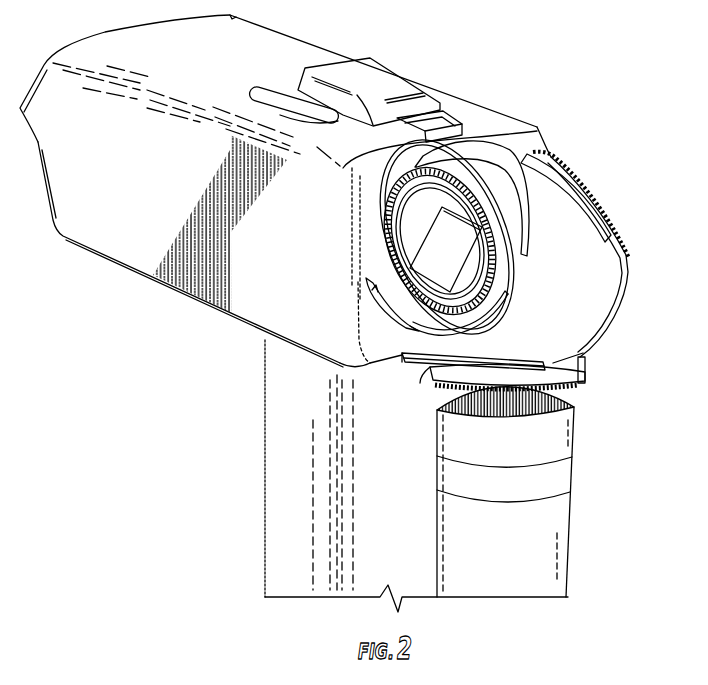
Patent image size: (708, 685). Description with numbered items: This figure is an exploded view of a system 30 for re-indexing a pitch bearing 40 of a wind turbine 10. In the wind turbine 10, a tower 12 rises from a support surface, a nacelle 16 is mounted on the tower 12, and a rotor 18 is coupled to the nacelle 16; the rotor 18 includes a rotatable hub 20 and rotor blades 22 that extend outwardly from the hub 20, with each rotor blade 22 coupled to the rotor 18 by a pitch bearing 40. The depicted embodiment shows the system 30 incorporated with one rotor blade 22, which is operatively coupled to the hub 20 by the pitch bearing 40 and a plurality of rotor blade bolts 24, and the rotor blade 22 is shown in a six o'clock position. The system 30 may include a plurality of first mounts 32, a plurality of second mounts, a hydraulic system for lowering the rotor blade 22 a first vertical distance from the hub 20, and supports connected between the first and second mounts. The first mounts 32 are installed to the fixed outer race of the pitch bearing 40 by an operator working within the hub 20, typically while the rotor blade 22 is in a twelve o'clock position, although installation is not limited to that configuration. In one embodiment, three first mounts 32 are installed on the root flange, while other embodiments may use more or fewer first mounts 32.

The wind turbine 10 is at (528, 88).
The tower 12 is at (273, 457).
The nacelle 16 is at (53, 207).
The rotor 18 is at (626, 286).
The hub 20 is at (562, 296).
The rotor blade 22 is at (553, 482).
The rotor blade bolts 24 is at (603, 207).
The system for re-indexing a pitch bearing 30 is at (600, 359).
The first mounts 32 is at (587, 376).
The pitch bearing 40 is at (562, 160).